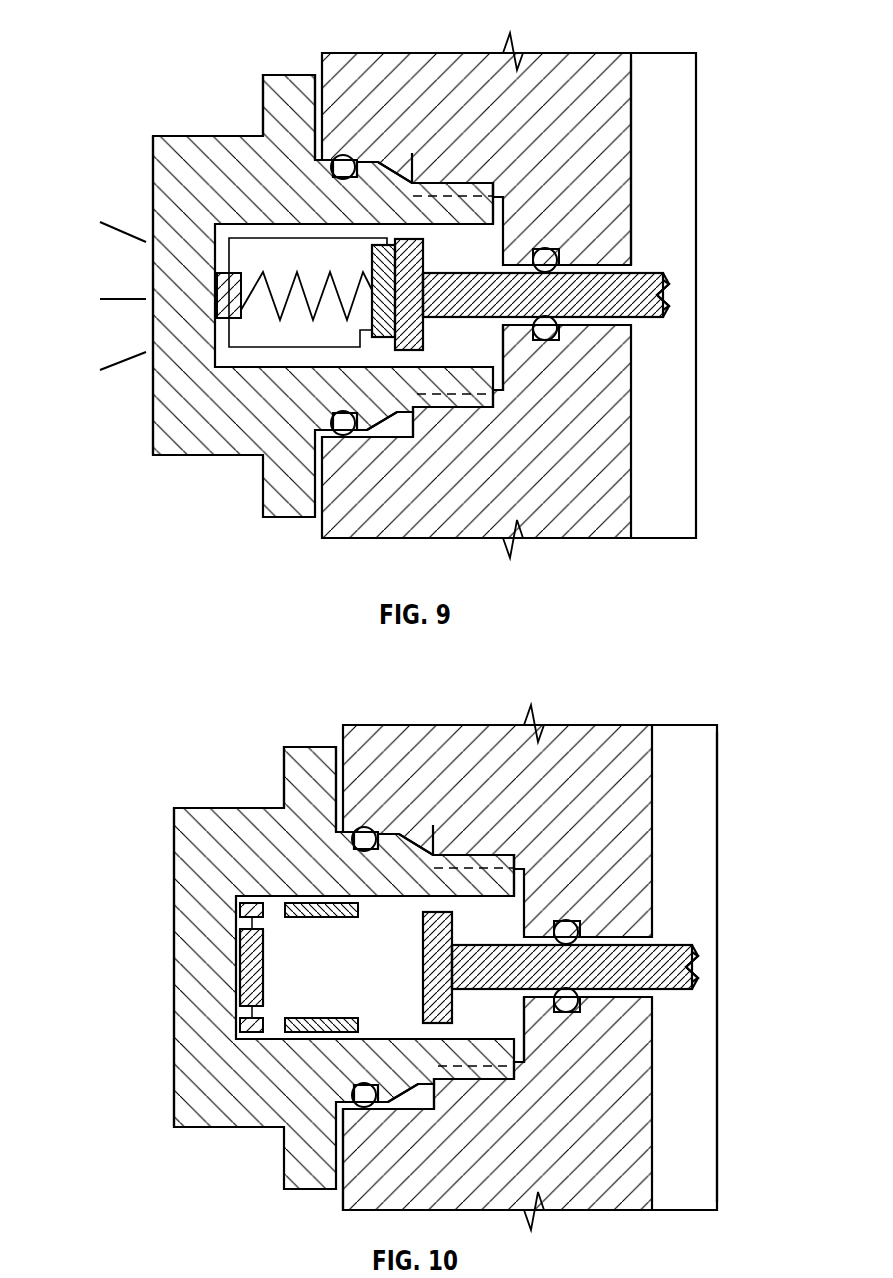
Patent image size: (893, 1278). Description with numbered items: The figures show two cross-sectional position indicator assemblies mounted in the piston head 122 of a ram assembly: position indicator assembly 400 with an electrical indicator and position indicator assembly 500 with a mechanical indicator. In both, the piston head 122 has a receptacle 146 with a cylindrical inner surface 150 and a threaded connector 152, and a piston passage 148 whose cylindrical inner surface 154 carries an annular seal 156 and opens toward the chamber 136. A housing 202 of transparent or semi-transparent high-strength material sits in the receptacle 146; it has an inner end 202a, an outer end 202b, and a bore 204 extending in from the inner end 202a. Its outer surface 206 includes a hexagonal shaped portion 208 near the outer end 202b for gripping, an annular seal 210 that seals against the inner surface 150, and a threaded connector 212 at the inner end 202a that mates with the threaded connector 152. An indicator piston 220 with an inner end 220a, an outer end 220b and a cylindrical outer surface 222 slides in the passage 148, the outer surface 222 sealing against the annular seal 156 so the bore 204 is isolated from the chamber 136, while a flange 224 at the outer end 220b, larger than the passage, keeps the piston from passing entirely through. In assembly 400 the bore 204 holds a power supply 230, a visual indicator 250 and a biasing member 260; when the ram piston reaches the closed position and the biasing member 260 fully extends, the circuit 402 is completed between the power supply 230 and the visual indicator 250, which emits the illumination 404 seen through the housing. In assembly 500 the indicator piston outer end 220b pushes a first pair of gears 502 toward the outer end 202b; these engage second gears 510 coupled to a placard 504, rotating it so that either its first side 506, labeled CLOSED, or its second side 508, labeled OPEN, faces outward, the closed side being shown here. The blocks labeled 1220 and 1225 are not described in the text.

In FIG. 9, the position indicator assembly 400 is at (138, 57).
In FIG. 10, the position indicator assembly 500 is at (123, 714).
In FIG. 9, the piston head 122 is at (592, 72).
In FIG. 10, the piston head 122 is at (530, 957).
In FIG. 9, the chamber 136 is at (636, 118).
In FIG. 10, the chamber 136 is at (749, 967).
In FIG. 9, the receptacle 146 is at (400, 440).
In FIG. 10, the receptacle 146 is at (418, 1124).
In FIG. 9, the piston passage 148 is at (552, 340).
In FIG. 10, the piston passage 148 is at (599, 1019).
In FIG. 9, the inner surface of receptacle 150 is at (345, 440).
In FIG. 10, the inner surface of receptacle 150 is at (372, 1128).
In FIG. 9, the threaded connector 152 is at (506, 400).
In FIG. 10, the threaded connector 152 is at (535, 1061).
In FIG. 9, the inner surface of piston passage 154 is at (620, 330).
In FIG. 10, the inner surface of piston passage 154 is at (609, 1040).
In FIG. 9, the annular seal 156 is at (539, 342).
In FIG. 10, the annular seal 156 is at (555, 905).
In FIG. 9, the housing 202 is at (150, 420).
In FIG. 10, the housing 202 is at (303, 968).
In FIG. 9, the inner end 202a is at (498, 186).
In FIG. 10, the inner end 202a is at (518, 862).
In FIG. 9, the outer end 202b is at (153, 158).
In FIG. 10, the outer end 202b is at (131, 964).
In FIG. 9, the bore 204 is at (250, 362).
In FIG. 9, the outer surface 206 is at (275, 73).
In FIG. 10, the outer surface 206 is at (303, 759).
In FIG. 9, the hexagonal shaped portion 208 is at (177, 460).
In FIG. 10, the hexagonal shaped portion 208 is at (222, 1161).
In FIG. 9, the annular seal 210 is at (347, 155).
In FIG. 10, the annular seal 210 is at (378, 816).
In FIG. 9, the threaded connector 212 is at (470, 410).
In FIG. 10, the threaded connector 212 is at (474, 1099).
In FIG. 9, the indicator piston 220 is at (613, 270).
In FIG. 10, the indicator piston 220 is at (575, 934).
In FIG. 9, the inner end 220a is at (672, 293).
In FIG. 10, the inner end 220a is at (738, 954).
In FIG. 9, the outer end 220b is at (426, 330).
In FIG. 10, the outer end 220b is at (481, 955).
In FIG. 9, the outer surface 222 is at (648, 270).
In FIG. 10, the outer surface 222 is at (665, 919).
In FIG. 9, the flange 224 is at (405, 352).
In FIG. 10, the flange 224 is at (466, 973).
In FIG. 9, the power supply 230 is at (378, 340).
In FIG. 9, the visual indicator 250 is at (217, 290).
In FIG. 9, the biasing member 260 is at (262, 262).
In FIG. 9, the circuit 402 is at (352, 236).
In FIG. 9, the illumination 404 is at (123, 297).
In FIG. 10, the first gears 502 is at (328, 940).
In FIG. 10, the placard 504 is at (172, 945).
In FIG. 10, the first side 506 is at (180, 982).
In FIG. 10, the second side 508 is at (289, 967).
In FIG. 10, the second gears 510 is at (248, 970).
In FIG. 9, the lower housing block 1220 is at (320, 530).
In FIG. 10, the lower housing block 1220 is at (389, 1171).
In FIG. 10, the lower housing block 1225 is at (564, 1113).